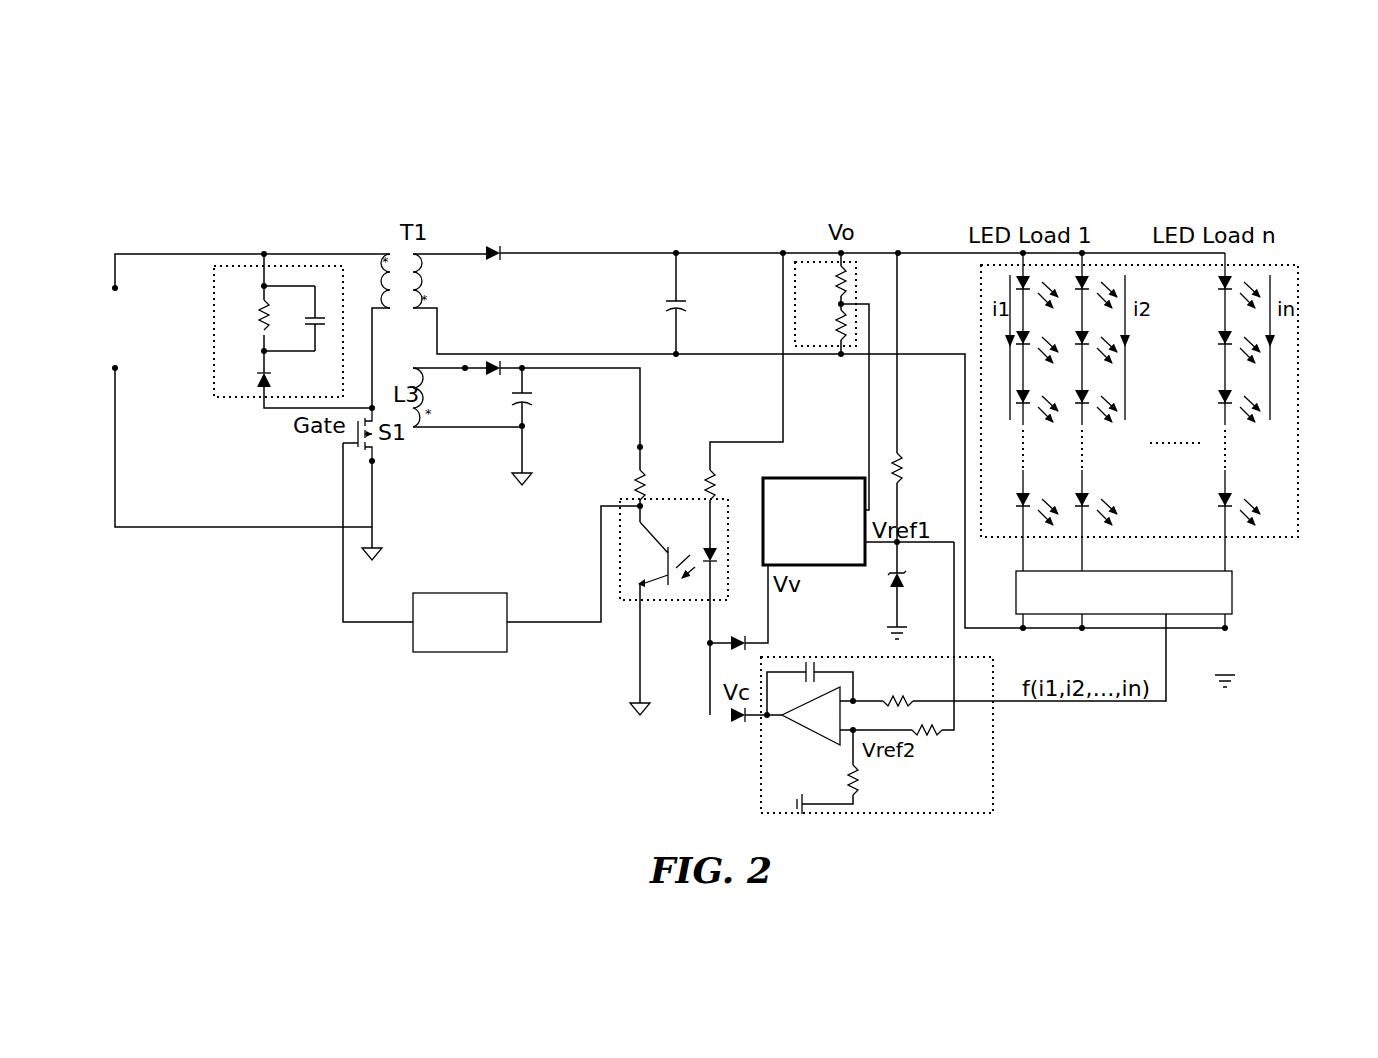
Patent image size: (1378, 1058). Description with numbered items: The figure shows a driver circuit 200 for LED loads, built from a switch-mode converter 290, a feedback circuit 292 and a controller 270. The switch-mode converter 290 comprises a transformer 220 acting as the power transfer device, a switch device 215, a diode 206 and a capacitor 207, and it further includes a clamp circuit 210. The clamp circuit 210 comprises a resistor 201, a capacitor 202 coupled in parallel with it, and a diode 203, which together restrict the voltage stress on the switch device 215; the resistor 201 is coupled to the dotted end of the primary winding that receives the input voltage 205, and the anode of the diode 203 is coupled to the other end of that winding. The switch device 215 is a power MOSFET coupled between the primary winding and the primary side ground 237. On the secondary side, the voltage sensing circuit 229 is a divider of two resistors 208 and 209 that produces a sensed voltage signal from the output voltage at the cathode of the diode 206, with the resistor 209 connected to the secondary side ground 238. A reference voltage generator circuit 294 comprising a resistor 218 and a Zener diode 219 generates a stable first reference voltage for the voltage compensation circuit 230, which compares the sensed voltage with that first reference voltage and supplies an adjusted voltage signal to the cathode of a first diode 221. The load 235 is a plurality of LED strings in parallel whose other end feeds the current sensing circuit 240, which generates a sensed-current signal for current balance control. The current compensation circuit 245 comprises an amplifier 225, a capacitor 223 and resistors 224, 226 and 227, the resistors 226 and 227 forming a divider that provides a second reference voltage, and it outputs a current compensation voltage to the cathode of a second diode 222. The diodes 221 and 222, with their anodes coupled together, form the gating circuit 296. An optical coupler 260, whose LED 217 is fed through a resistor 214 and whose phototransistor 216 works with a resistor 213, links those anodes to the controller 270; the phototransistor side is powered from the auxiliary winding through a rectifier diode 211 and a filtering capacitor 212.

The driver circuit 200 is at (1148, 152).
The resistor 201 is at (247, 309).
The capacitor 202 is at (333, 306).
The diode 203 is at (287, 383).
The input voltage 205 is at (100, 268).
The diode 206 is at (501, 238).
The capacitor 207 is at (651, 305).
The resistor 208 is at (825, 304).
The resistor 209 is at (820, 325).
The clamp circuit 210 is at (212, 325).
The rectifier diode 211 is at (486, 381).
The capacitor 212 is at (547, 403).
The resistor 213 is at (618, 485).
The resistor 214 is at (732, 485).
The switch device 215 is at (323, 443).
The phototransistor 216 is at (674, 549).
The LED 217 is at (730, 544).
The resistor 218 is at (921, 468).
The Zener diode 219 is at (915, 574).
The transformer 220 is at (390, 244).
The first diode 221 is at (749, 632).
The second diode 222 is at (735, 730).
The capacitor 223 is at (811, 659).
The resistor 224 is at (899, 688).
The amplifier 225 is at (806, 731).
The resistor 226 is at (931, 720).
The resistor 227 is at (874, 783).
The voltage sensing circuit 229 is at (868, 222).
The voltage compensation circuit 230 is at (838, 460).
The load 235 is at (1292, 265).
The primary side ground 237 is at (378, 556).
The secondary side ground 238 is at (1240, 672).
The current sensing circuit 240 is at (1240, 602).
The current compensation circuit 245 is at (990, 760).
The optical coupler 260 is at (695, 495).
The controller 270 is at (462, 653).
The switch-mode converter 290 is at (423, 175).
The feedback circuit 292 is at (1125, 752).
The reference voltage generator circuit 294 is at (915, 450).
The gating circuit 296 is at (697, 730).